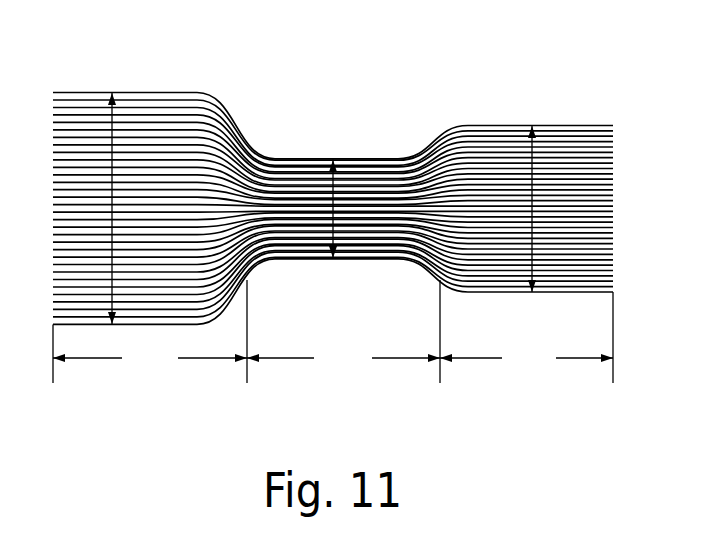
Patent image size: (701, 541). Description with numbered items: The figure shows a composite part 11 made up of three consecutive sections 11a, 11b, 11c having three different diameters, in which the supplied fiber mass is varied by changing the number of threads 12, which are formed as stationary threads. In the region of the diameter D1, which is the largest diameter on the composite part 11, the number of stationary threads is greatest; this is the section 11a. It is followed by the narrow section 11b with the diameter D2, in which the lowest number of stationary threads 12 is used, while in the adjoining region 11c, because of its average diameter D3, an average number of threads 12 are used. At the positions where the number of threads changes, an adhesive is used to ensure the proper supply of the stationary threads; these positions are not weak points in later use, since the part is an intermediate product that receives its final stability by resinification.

The composite part 11 is at (333, 221).
The section 11a is at (150, 331).
The section 11b is at (343, 331).
The region 11c is at (526, 337).
The threads 12 is at (157, 92).
The diameter D1 is at (103, 108).
The diameter D2 is at (317, 168).
The diameter D3 is at (547, 140).